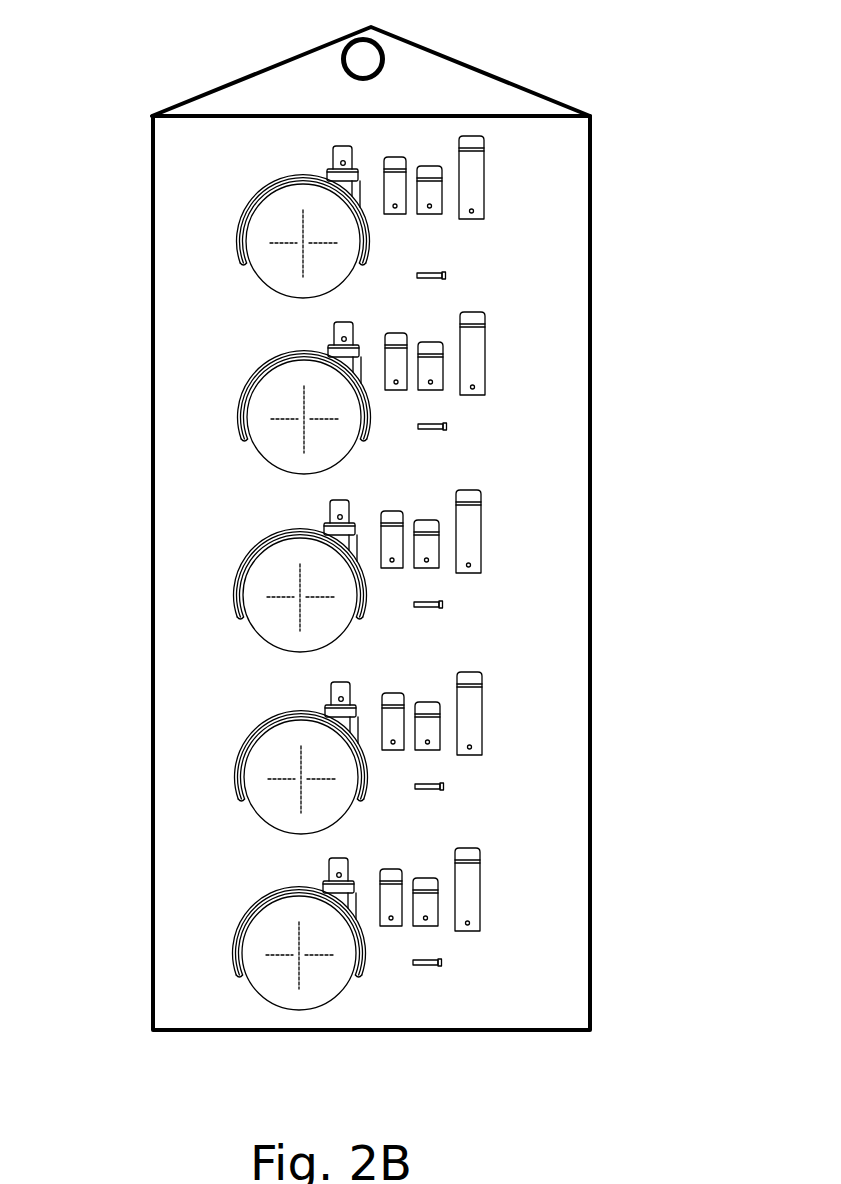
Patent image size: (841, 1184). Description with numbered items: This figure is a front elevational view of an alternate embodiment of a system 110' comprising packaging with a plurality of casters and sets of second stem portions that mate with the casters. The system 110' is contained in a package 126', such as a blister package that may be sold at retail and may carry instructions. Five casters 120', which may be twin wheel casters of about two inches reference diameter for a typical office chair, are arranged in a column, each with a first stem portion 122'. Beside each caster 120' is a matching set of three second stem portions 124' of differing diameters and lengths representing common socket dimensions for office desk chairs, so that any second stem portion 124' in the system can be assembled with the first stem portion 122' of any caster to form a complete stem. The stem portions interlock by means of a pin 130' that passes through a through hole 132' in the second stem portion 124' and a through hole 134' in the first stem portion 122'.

The system 110' is at (422, 519).
The package 126' is at (425, 40).
The caster 120' is at (226, 250).
The first stem portion 122' is at (208, 170).
The second stem portions 124' is at (544, 199).
The pin 130' is at (555, 965).
The through hole 132' is at (541, 894).
The through hole 134' is at (206, 885).